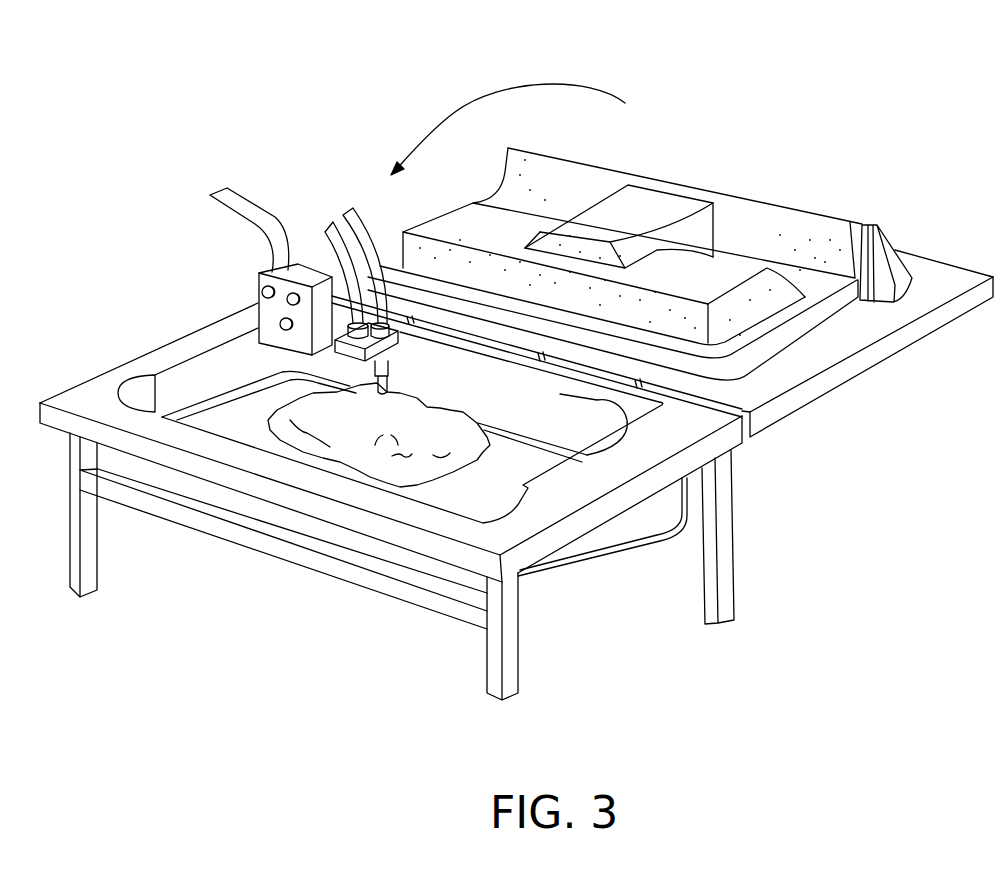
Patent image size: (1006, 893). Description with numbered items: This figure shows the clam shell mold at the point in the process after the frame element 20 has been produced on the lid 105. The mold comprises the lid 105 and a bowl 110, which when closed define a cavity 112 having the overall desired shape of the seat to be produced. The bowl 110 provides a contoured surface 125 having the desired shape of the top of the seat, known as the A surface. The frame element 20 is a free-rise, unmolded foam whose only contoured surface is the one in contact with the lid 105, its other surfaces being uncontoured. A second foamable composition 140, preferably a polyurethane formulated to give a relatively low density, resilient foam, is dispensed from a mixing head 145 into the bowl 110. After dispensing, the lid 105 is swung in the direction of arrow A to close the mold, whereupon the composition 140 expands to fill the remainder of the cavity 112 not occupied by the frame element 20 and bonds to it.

The frame element 20 is at (682, 207).
The lid 105 is at (903, 340).
The bowl 110 is at (558, 538).
The cavity 112 is at (494, 505).
The contoured surface 125 is at (227, 430).
The second foamable composition 140 is at (362, 460).
The mixing head 145 is at (302, 272).
The arrow A is at (467, 101).